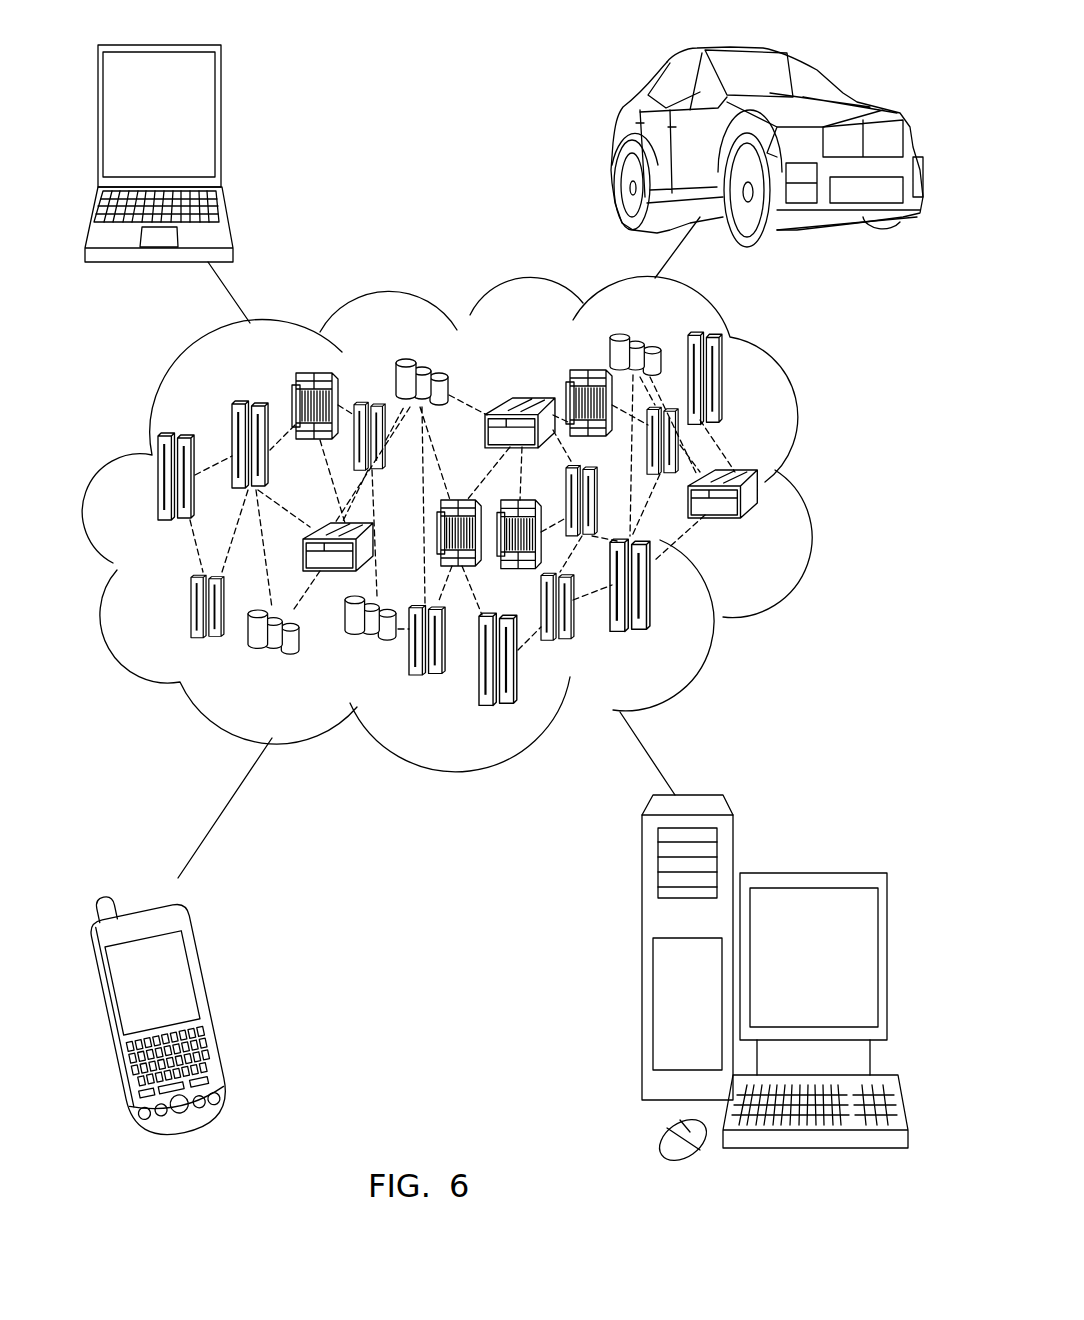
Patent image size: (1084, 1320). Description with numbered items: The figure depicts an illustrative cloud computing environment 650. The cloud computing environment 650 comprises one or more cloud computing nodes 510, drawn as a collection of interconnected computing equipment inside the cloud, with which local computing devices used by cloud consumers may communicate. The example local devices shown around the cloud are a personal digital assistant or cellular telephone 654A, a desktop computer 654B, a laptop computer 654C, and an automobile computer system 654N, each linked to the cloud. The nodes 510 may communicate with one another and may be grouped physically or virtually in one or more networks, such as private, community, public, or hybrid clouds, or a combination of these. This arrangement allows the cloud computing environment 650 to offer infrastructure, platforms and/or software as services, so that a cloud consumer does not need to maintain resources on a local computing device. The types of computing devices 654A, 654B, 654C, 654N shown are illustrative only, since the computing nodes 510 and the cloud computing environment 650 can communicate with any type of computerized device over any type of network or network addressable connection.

The cloud computing nodes 510 is at (760, 529).
The cloud computing environment 650 is at (813, 487).
The personal digital assistant (PDA) or cellular telephone 654A is at (212, 998).
The desktop computer 654B is at (810, 873).
The laptop computer 654C is at (220, 126).
The automobile computer system 654N is at (612, 146).